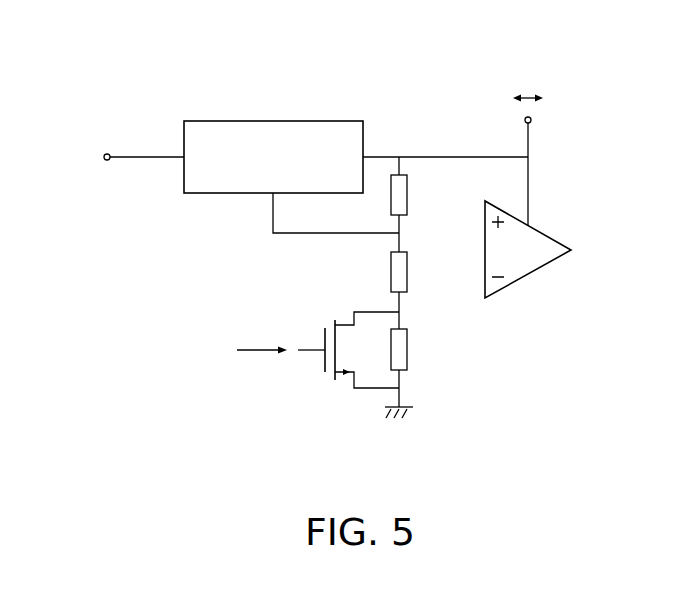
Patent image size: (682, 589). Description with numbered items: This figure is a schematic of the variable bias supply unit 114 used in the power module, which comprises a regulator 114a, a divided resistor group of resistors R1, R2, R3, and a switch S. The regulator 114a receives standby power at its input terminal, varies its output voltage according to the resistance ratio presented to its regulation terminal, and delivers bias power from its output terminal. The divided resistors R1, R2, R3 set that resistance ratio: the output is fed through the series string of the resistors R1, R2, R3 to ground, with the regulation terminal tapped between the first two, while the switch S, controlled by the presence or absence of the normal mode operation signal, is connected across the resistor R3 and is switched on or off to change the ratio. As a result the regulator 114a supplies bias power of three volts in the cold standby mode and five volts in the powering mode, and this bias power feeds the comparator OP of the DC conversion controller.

The variable bias supply unit 114 is at (364, 33).
The regulator 114a is at (308, 121).
The divided resistor R1 is at (414, 195).
The divided resistor R2 is at (414, 272).
The divided resistor R3 is at (415, 349).
The switch S is at (348, 362).
The comparator OP is at (543, 232).